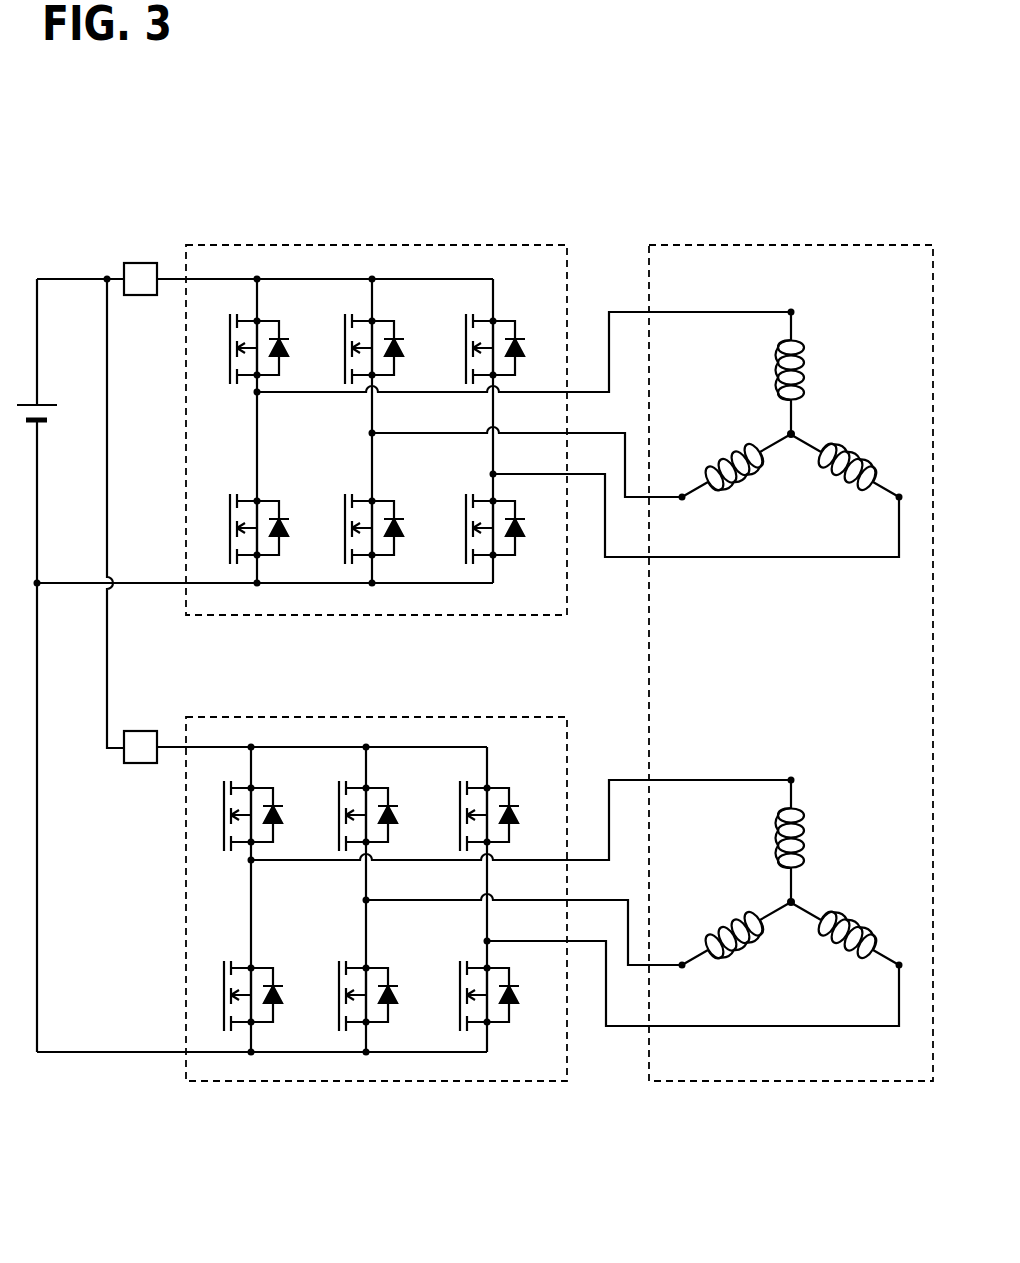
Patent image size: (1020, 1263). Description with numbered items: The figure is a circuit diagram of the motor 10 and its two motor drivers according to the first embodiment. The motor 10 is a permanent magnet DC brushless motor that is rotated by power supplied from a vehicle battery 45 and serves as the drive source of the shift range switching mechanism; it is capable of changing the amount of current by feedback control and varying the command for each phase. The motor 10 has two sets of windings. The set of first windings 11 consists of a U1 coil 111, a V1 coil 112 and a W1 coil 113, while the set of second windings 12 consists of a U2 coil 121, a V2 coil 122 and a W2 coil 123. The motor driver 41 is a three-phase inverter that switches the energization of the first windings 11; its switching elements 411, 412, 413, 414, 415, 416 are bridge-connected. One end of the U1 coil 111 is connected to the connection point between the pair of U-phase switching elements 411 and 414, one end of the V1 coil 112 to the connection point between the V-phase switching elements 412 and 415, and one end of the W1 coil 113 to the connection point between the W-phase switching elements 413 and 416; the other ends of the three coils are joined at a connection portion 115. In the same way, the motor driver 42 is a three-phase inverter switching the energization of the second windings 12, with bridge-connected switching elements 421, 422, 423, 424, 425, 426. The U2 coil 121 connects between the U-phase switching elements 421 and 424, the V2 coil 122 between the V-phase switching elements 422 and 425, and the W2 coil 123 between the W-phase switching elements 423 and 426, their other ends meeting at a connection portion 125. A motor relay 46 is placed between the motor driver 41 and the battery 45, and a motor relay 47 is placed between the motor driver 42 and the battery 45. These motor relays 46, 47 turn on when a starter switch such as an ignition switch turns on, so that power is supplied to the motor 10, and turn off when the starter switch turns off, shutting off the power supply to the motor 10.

The motor 10 is at (693, 244).
The set of first windings 11 is at (791, 403).
The set of second windings 12 is at (791, 872).
The U1 coil 111 is at (806, 369).
The V1 coil 112 is at (745, 450).
The W1 coil 113 is at (846, 448).
The connection portion 115 is at (791, 445).
The U2 coil 121 is at (804, 837).
The V2 coil 122 is at (741, 920).
The W2 coil 123 is at (843, 914).
The connection portion 125 is at (791, 910).
The motor driver 41 is at (218, 244).
The motor driver 42 is at (218, 716).
The switching element 411 is at (261, 320).
The switching element 412 is at (376, 320).
The switching element 413 is at (496, 319).
The switching element 414 is at (262, 499).
The switching element 415 is at (377, 499).
The switching element 416 is at (516, 546).
The switching element 421 is at (255, 787).
The switching element 422 is at (370, 787).
The switching element 423 is at (490, 786).
The switching element 424 is at (256, 966).
The switching element 425 is at (371, 966).
The switching element 426 is at (510, 1013).
The battery 45 is at (48, 403).
The motor relay 46 is at (136, 262).
The motor relay 47 is at (136, 730).